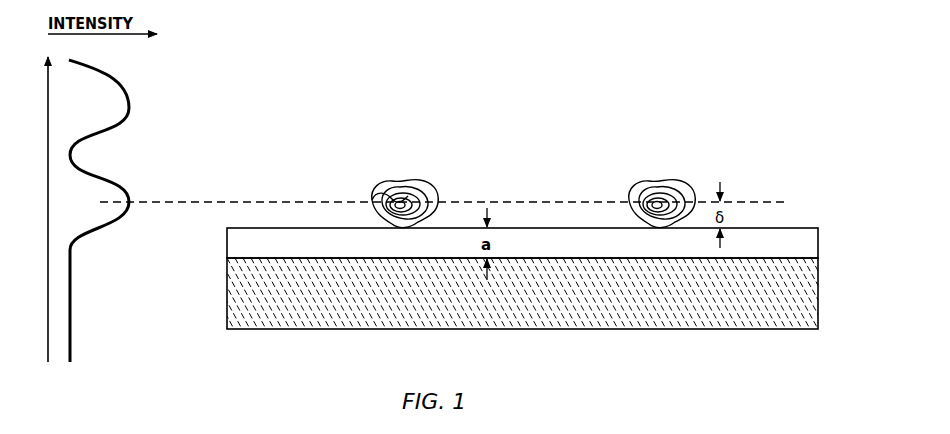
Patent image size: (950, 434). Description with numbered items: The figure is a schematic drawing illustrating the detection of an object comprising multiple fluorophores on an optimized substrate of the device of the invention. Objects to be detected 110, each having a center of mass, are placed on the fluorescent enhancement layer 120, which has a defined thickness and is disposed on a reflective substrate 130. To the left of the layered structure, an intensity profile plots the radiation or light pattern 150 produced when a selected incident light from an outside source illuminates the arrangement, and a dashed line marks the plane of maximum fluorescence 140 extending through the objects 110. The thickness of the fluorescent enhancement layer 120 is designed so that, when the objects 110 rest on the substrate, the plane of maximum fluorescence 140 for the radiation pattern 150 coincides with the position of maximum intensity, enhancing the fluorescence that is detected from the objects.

The objects to be detected 110 is at (396, 183).
The fluorescent enhancement layer 120 is at (800, 236).
The reflective substrate 130 is at (284, 331).
The plane of maximum fluorescence 140 is at (513, 200).
The radiation pattern 150 is at (131, 107).